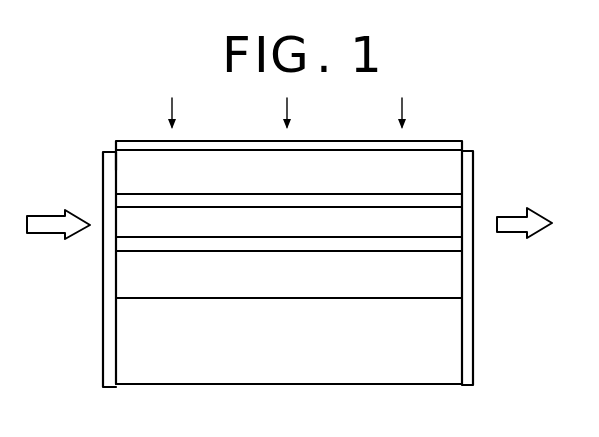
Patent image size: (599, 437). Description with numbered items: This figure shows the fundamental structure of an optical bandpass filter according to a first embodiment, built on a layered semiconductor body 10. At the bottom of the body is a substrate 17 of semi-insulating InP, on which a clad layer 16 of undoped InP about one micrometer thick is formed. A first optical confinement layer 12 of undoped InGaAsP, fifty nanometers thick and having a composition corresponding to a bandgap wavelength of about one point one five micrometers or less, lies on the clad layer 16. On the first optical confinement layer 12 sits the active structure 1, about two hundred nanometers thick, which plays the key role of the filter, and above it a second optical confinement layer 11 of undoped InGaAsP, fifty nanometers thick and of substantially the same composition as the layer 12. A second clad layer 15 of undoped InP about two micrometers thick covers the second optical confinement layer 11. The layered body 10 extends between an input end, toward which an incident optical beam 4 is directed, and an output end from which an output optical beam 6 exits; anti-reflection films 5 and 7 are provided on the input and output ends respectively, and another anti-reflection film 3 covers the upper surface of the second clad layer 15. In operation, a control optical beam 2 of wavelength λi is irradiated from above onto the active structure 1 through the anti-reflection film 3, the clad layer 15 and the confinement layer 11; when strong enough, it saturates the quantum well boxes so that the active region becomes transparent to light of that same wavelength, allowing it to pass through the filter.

The active structure 1 is at (432, 217).
The control optical beam 2 is at (407, 105).
The anti-reflection film 3 is at (428, 141).
The incident optical beam 4 is at (41, 234).
The anti-reflection film 5 is at (101, 242).
The output optical beam 6 is at (533, 238).
The anti-reflection film 7 is at (475, 239).
The layered semiconductor body 10 is at (147, 389).
The second optical confinement layer 11 is at (423, 200).
The first optical confinement layer 12 is at (432, 245).
The second clad layer 15 is at (128, 167).
The clad layer 16 is at (453, 278).
The substrate 17 is at (453, 352).